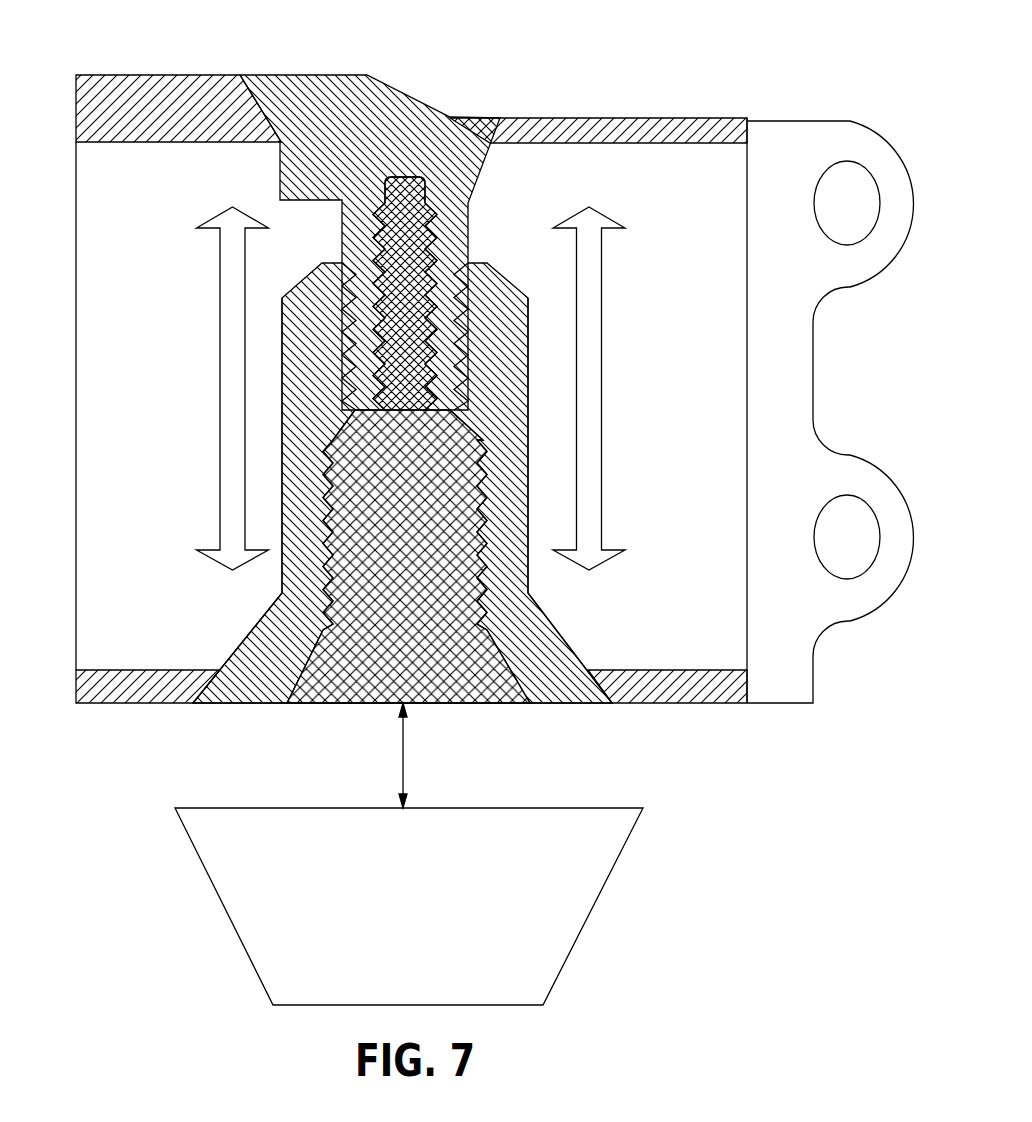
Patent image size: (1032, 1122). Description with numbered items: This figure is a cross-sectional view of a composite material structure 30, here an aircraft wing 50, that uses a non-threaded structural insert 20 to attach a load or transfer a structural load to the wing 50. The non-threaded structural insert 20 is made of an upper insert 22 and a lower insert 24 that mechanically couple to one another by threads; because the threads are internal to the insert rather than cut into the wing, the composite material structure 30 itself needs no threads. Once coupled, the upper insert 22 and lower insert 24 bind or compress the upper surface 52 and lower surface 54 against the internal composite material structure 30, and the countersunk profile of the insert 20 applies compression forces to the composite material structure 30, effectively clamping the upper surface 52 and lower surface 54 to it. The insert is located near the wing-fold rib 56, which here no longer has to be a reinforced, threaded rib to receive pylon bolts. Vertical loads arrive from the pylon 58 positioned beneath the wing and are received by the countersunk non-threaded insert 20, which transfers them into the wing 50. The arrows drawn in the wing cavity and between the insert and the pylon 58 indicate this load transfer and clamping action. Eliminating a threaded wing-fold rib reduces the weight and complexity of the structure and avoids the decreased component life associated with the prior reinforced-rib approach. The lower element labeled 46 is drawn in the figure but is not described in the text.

The non-threaded structural insert 20 is at (400, 92).
The upper insert 22 is at (468, 241).
The lower insert 24 is at (563, 637).
The composite material structure 30 is at (76, 345).
The plunger / nut 46 is at (510, 703).
The wing 50 is at (731, 53).
The upper surface 52 is at (162, 75).
The lower surface 54 is at (148, 703).
The wing-fold rib 56 is at (872, 458).
The pylon 58 is at (409, 854).